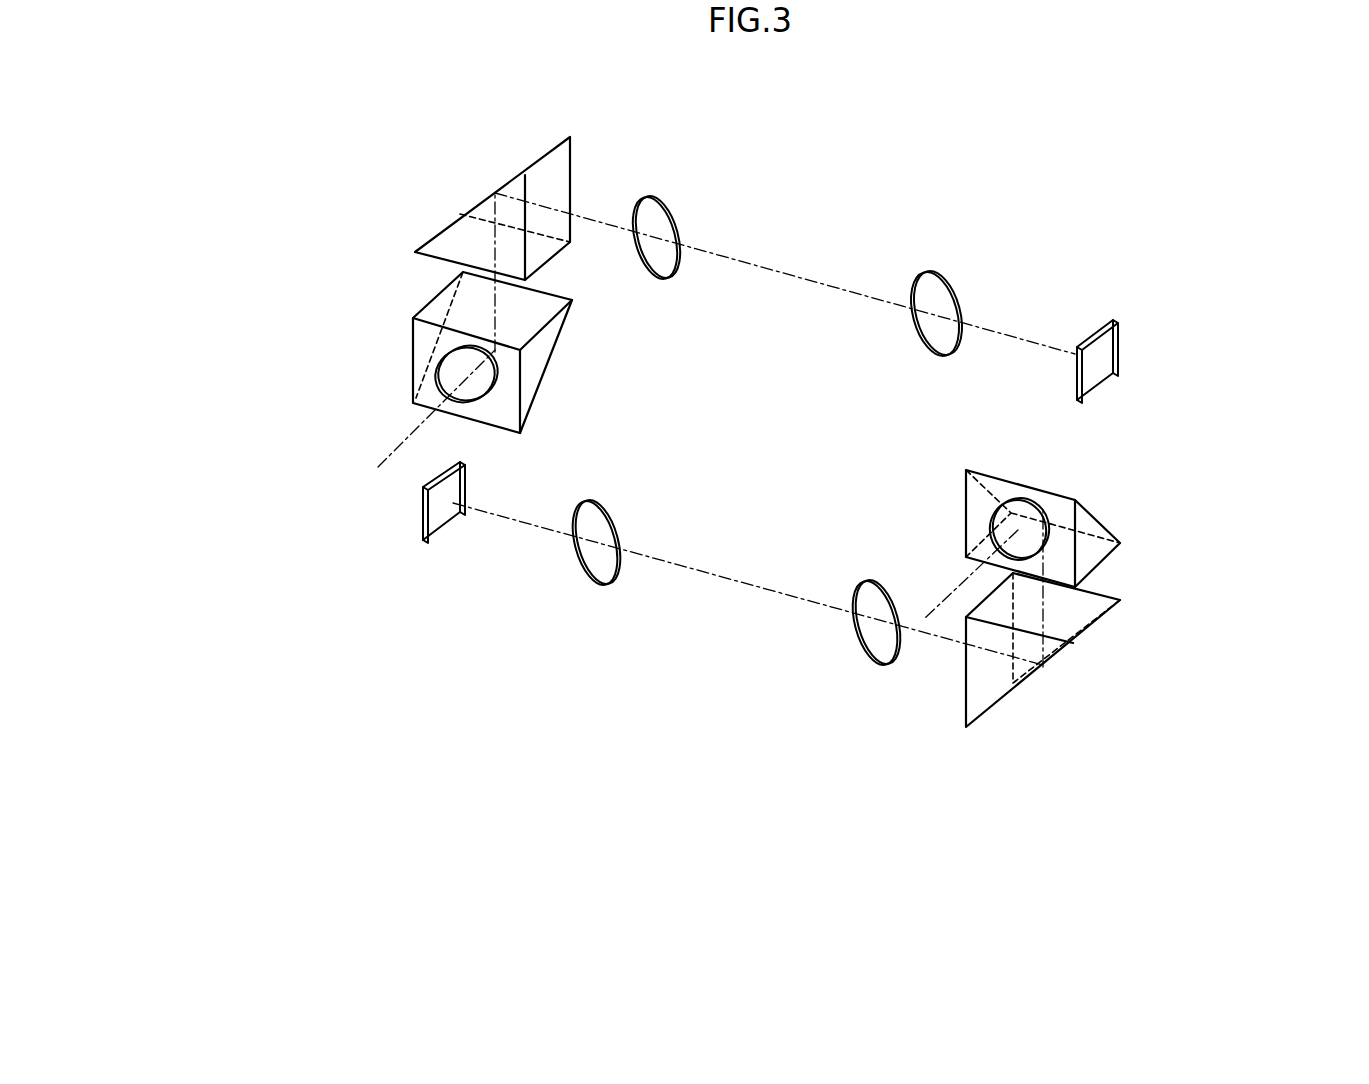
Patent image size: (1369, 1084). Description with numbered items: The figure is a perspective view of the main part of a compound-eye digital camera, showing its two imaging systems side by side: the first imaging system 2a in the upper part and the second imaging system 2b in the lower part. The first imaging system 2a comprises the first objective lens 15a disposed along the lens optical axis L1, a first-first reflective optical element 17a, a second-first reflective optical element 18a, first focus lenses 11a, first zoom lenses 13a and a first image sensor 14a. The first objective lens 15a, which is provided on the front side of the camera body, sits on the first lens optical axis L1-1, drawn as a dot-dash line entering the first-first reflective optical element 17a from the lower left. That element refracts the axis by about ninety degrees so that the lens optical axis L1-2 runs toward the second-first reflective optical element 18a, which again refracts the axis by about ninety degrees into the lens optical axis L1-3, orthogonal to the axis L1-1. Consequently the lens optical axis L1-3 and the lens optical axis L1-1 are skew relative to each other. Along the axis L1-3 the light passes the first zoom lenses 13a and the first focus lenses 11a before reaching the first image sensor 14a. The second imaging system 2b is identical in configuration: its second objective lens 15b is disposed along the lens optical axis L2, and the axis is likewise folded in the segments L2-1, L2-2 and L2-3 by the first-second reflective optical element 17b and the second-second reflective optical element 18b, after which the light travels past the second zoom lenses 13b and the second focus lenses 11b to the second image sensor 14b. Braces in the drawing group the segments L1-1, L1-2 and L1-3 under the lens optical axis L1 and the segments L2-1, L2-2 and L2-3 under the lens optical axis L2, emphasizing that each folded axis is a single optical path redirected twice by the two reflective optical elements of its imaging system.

The first imaging system 2a is at (411, 181).
The second imaging system 2b is at (1123, 704).
The first focus lenses 11a is at (948, 270).
The second focus lenses 11b is at (595, 577).
The first zoom lenses 13a is at (666, 193).
The second zoom lenses 13b is at (875, 653).
The first image sensor 14a is at (1107, 322).
The second image sensor 14b is at (440, 527).
The first objective lens 15a is at (475, 395).
The second objective lens 15b is at (990, 517).
The first-first reflective optical element 17a is at (537, 360).
The first-second reflective optical element 17b is at (1083, 513).
The second-first reflective optical element 18a is at (527, 168).
The second-second reflective optical element 18b is at (1080, 640).
The lens optical axis L1 is at (268, 283).
The first lens optical axis L1-1 is at (397, 447).
The lens optical axis L1-2 is at (493, 272).
The lens optical axis L1-3 is at (603, 222).
The lens optical axis L2 is at (1030, 846).
The lens optical axis L2-1 is at (946, 600).
The lens optical axis L2-2 is at (1038, 602).
The lens optical axis L2-3 is at (940, 643).